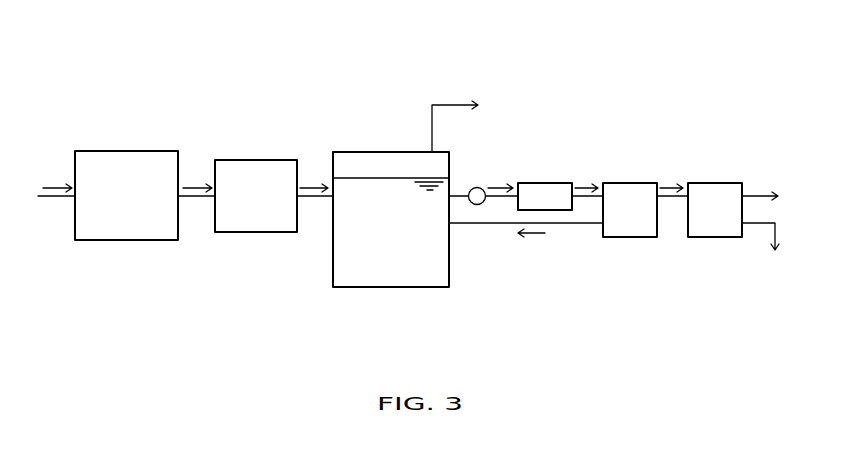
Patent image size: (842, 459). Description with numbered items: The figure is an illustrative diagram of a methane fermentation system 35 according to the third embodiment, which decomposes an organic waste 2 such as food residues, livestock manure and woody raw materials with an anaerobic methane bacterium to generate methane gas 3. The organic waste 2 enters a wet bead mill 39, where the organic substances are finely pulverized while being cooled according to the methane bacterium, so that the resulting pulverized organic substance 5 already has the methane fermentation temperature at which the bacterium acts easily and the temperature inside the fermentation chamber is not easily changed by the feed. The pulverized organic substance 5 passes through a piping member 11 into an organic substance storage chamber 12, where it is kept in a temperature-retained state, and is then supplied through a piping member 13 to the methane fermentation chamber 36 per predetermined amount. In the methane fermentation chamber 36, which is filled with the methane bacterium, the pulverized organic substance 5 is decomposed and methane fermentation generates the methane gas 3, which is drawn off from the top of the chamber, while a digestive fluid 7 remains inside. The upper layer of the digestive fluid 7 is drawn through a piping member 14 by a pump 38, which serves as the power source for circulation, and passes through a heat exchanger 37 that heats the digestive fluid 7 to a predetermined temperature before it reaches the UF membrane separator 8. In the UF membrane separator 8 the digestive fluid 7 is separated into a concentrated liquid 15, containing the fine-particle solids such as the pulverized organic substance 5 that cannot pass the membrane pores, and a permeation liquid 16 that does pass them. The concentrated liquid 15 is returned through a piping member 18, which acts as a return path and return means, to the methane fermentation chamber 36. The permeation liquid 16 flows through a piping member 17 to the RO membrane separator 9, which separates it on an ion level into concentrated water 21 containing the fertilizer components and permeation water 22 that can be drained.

The organic waste 2 is at (52, 185).
The wet bead mill 39 is at (107, 151).
The pulverized organic substance 5 is at (192, 185).
The organic substance storage chamber 12 is at (250, 160).
The piping member 11 is at (197, 198).
The piping member 13 is at (312, 198).
The digestive fluid 7 is at (372, 192).
The methane fermentation chamber 36 is at (373, 289).
The methane gas 3 is at (452, 103).
The piping member 14 is at (453, 190).
The pump 38 is at (477, 187).
The heat exchanger 37 is at (544, 182).
The UF membrane separator 8 is at (628, 238).
The permeation liquid 16 is at (668, 186).
The piping member 17 is at (670, 200).
The RO membrane separator 9 is at (715, 238).
The concentrated water 21 is at (757, 194).
The permeation water 22 is at (755, 226).
The piping member 18 is at (566, 226).
The concentrated liquid 15 is at (533, 237).
The methane fermentation system 35 is at (601, 49).